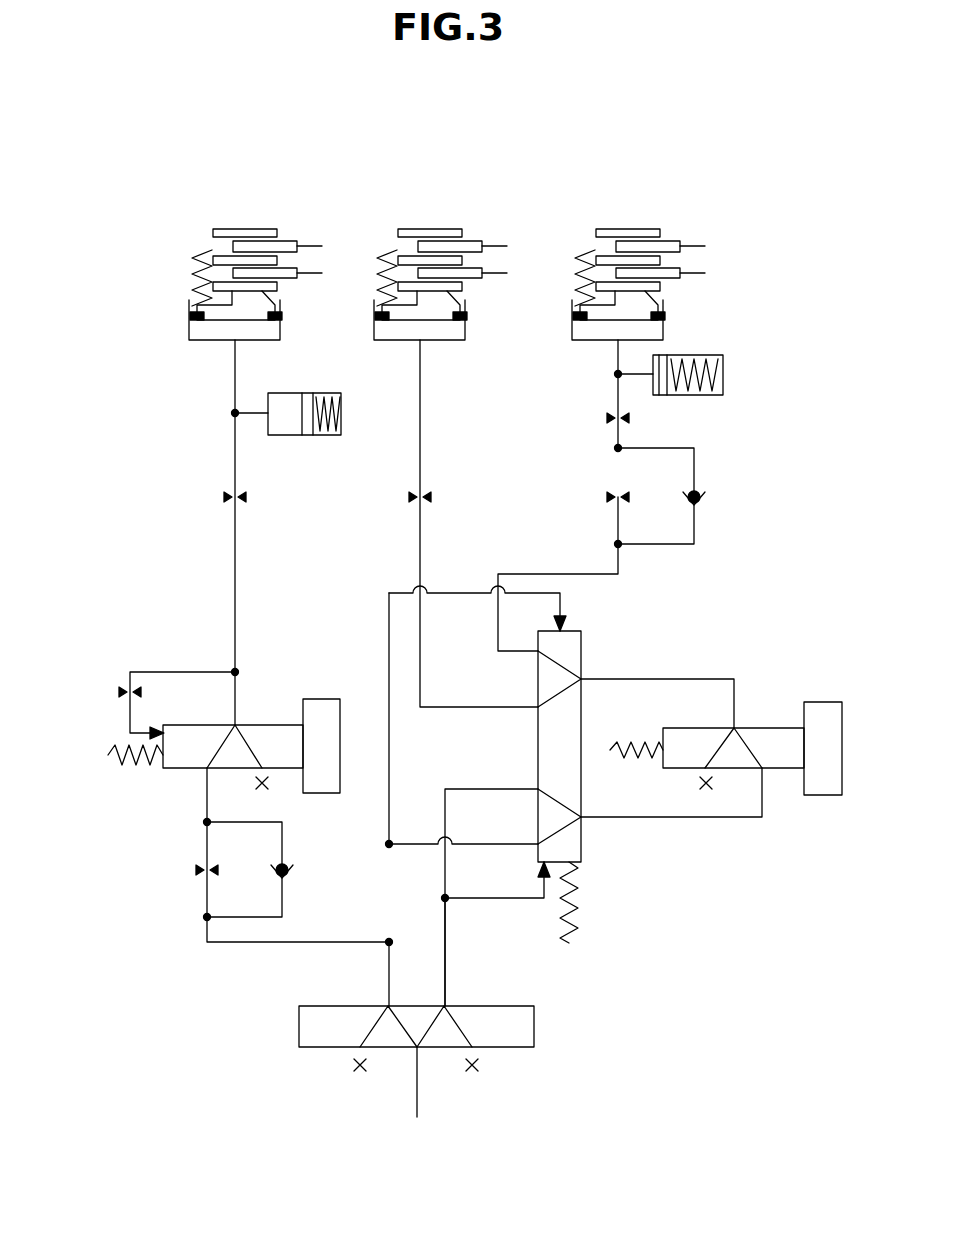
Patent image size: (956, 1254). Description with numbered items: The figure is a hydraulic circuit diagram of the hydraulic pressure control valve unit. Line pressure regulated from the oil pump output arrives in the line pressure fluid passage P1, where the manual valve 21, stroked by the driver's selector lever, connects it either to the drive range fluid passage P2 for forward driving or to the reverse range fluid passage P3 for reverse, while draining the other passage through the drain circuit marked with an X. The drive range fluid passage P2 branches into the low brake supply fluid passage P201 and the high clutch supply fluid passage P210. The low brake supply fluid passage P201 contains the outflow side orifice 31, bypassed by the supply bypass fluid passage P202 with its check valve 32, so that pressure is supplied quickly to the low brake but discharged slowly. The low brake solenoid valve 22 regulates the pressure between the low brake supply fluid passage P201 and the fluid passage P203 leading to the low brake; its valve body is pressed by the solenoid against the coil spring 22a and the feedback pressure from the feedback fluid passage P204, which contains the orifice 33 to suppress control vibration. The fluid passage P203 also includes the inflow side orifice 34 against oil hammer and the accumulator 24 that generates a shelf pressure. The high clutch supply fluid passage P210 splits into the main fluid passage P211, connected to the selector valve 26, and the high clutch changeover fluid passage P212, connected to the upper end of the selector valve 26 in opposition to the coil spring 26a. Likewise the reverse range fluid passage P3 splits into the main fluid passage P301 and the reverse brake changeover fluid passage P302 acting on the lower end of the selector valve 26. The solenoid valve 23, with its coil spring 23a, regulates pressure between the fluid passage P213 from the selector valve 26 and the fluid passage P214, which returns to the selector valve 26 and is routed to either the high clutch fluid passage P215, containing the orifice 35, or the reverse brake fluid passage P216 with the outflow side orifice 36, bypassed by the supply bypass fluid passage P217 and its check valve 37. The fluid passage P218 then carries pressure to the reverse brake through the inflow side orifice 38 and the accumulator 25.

The manual valve 21 is at (303, 1003).
The low brake solenoid valve 22 is at (321, 698).
The coil spring 22a is at (108, 754).
The solenoid valve 23 is at (824, 700).
The coil spring 23a is at (633, 757).
The accumulator 24 is at (308, 390).
The accumulator 25 is at (700, 350).
The selector valve 26 is at (588, 626).
The coil spring 26a is at (580, 910).
The outflow side orifice 31 is at (196, 882).
The check valve 32 is at (293, 882).
The orifice 33 is at (121, 682).
The inflow side orifice 34 is at (226, 488).
The orifice 35 is at (432, 488).
The outflow side orifice 36 is at (610, 488).
The check valve 37 is at (704, 488).
The inflow side orifice 38 is at (638, 417).
The line pressure fluid passage P1 is at (420, 1100).
The drive range fluid passage P2 is at (388, 972).
The reverse range fluid passage P3 is at (447, 989).
The low brake supply fluid passage P201 is at (205, 843).
The supply bypass fluid passage P202 is at (283, 846).
The fluid passage P203 is at (234, 560).
The feedback fluid passage P204 is at (180, 671).
The high clutch supply fluid passage P210 is at (388, 886).
The main fluid passage P211 is at (413, 840).
The high clutch changeover fluid passage P212 is at (388, 605).
The fluid passage P213 is at (678, 819).
The fluid passage P214 is at (678, 678).
The high clutch fluid passage P215 is at (421, 691).
The reverse brake fluid passage P216 is at (497, 575).
The supply bypass fluid passage P217 is at (675, 547).
The fluid passage P218 is at (617, 398).
The main fluid passage P301 is at (446, 866).
The reverse brake changeover fluid passage P302 is at (508, 900).